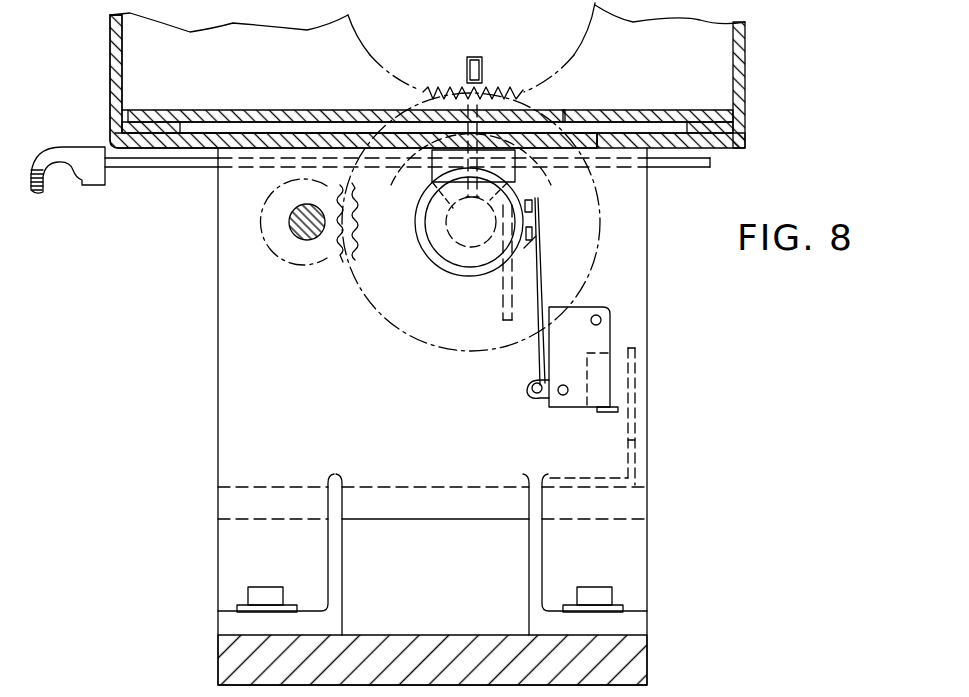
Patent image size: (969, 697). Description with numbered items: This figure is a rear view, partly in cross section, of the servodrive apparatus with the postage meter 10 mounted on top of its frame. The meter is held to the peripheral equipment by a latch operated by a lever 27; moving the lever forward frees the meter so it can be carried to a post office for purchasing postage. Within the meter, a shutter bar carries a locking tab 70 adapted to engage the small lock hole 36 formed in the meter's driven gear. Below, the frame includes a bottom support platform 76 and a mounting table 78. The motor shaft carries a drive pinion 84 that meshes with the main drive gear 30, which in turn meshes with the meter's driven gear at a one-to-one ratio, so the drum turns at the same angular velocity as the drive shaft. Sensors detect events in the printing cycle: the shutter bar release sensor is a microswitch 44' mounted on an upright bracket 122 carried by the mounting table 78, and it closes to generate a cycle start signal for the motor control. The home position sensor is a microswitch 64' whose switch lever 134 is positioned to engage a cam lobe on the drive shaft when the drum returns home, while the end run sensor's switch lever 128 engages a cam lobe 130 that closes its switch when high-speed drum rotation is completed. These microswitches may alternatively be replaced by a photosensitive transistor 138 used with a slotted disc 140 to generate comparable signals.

The postage meter 10 is at (778, 83).
The lever 27 is at (97, 187).
The main drive gear 30 is at (373, 280).
The lock hole 36 is at (484, 60).
The microswitch 44' is at (626, 413).
The microswitch 64' is at (609, 351).
The locking tab 70 is at (462, 72).
The bottom support platform 76 is at (642, 656).
The mounting table 78 is at (642, 504).
The drive pinion 84 is at (282, 255).
The upright bracket 122 is at (636, 445).
The switch lever 128 is at (541, 270).
The cam lobe 130 is at (533, 216).
The switch lever 134 is at (530, 247).
The photosensitive transistor 138 is at (444, 198).
The slotted disc 140 is at (440, 271).